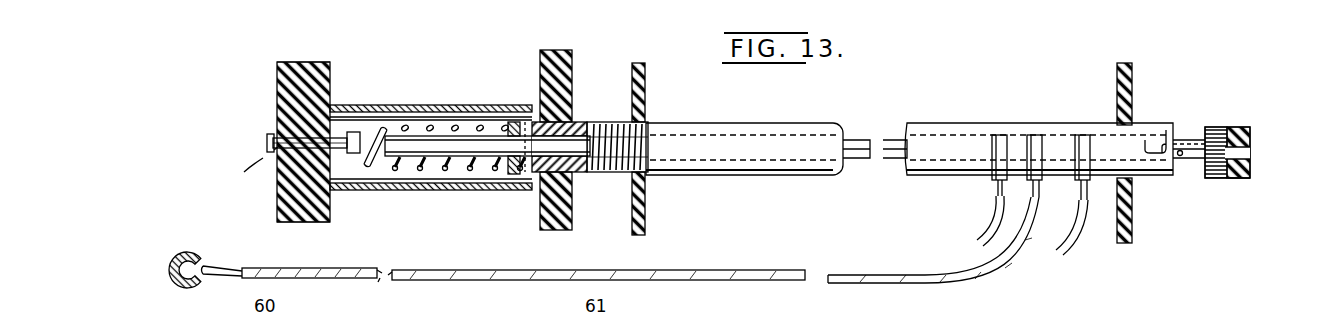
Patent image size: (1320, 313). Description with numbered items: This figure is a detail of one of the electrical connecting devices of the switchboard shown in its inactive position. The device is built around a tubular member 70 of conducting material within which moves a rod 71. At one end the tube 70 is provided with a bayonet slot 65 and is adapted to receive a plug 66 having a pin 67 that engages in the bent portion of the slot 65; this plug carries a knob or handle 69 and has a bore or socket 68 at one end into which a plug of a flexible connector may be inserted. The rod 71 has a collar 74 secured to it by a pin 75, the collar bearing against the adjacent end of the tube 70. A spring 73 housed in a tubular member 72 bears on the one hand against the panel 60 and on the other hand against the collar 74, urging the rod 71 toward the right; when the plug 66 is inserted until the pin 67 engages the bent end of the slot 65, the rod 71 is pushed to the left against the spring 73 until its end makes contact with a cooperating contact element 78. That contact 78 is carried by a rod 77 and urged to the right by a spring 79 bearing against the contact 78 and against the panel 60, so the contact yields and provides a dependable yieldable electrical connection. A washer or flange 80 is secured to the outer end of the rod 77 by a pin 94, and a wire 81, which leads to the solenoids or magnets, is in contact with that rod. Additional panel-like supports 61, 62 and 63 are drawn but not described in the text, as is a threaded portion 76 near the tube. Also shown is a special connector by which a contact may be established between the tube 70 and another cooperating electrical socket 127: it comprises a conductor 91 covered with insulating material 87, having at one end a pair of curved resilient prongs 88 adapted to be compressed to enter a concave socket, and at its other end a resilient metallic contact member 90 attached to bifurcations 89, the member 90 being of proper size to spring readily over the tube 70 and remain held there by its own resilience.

The panel 60 is at (318, 62).
The wall 61 is at (552, 52).
The plate 62 is at (640, 63).
The bracket wall 63 is at (1123, 63).
The bayonet slot 65 is at (1158, 142).
The plug 66 is at (1190, 145).
The pin 67 is at (1180, 160).
The bore or socket 68 is at (1251, 154).
The knob or handle 69 is at (1237, 179).
The tubular member 70 is at (760, 133).
The rod 71 is at (420, 137).
The tubular member 72 is at (463, 107).
The spring 73 is at (418, 170).
The collar 74 is at (512, 175).
The pin 75 is at (525, 173).
The threaded portion 76 is at (606, 122).
The rod 77 is at (276, 150).
The contact element 78 is at (353, 153).
The spring 79 is at (340, 124).
The washer or flange 80 is at (276, 138).
The wire 81 is at (244, 172).
The insulating material 87 is at (325, 269).
The curved resilient prongs 88 is at (229, 267).
The bifurcations 89 is at (1037, 187).
The resilient metallic contact member 90 is at (1037, 150).
The conductor 91 is at (382, 281).
The pin 94 is at (267, 142).
The electrical socket 127 is at (187, 252).